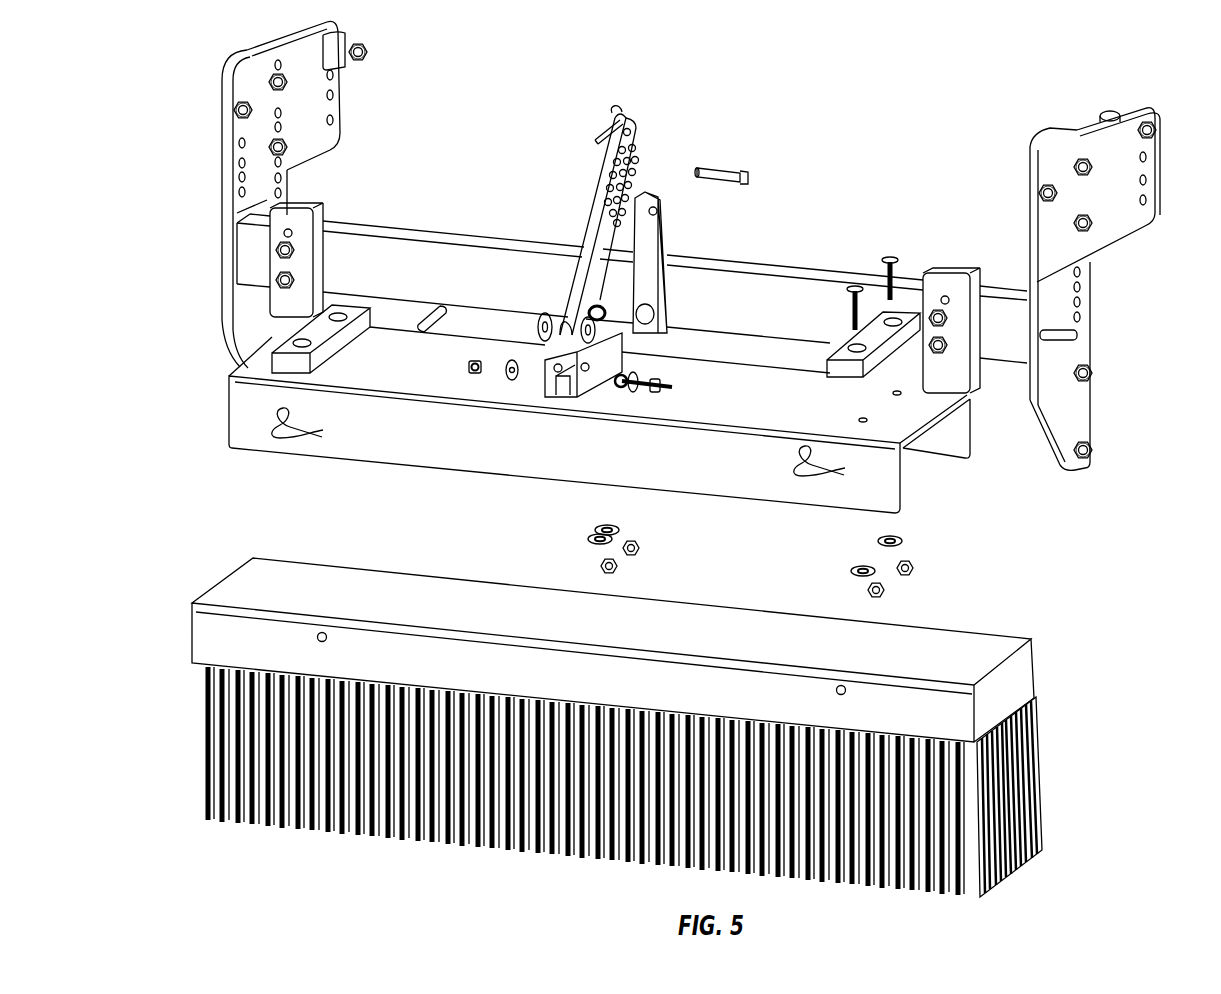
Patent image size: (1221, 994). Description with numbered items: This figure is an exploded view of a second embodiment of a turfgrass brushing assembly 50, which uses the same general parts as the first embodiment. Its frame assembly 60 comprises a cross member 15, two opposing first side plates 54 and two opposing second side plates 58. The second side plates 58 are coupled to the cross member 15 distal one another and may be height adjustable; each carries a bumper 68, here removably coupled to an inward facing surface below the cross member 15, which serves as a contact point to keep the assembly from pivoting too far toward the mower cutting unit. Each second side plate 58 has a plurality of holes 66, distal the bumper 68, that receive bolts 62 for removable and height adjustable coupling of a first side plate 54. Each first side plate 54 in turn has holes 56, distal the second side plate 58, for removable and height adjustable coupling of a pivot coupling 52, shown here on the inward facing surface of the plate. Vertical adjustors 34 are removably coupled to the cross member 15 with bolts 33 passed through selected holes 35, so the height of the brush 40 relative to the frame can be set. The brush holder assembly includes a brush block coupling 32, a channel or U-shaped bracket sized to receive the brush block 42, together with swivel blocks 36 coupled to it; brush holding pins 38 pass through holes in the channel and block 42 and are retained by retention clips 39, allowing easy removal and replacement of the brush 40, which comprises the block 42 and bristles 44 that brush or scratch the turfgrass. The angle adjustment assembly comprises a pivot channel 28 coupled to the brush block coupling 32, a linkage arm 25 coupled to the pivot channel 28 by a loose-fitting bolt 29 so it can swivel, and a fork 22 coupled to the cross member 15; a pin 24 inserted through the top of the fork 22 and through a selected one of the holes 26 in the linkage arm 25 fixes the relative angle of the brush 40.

The cross member 15 is at (462, 238).
The fork 22 is at (637, 197).
The pin 24 is at (717, 170).
The linkage arm 25 is at (593, 217).
The holes 26 is at (630, 148).
The pivot channel 28 is at (547, 377).
The loose-fitting bolt 29 is at (668, 387).
The brush block coupling 32 is at (247, 410).
The bolts 33 is at (283, 255).
The vertical adjustor 34 is at (313, 255).
The holes 35 is at (953, 302).
The swivel blocks 36 is at (320, 332).
The brush holding pins 38 is at (445, 317).
The retention clips 39 is at (260, 428).
The brush 40 is at (586, 709).
The brush block 42 is at (217, 635).
The bristles 44 is at (260, 757).
The turfgrass brushing assembly 50 is at (1048, 294).
The pivot coupling 52 is at (337, 42).
The first side plates 54 is at (297, 35).
The holes 56 is at (335, 100).
The second side plates 58 is at (247, 52).
The frame assembly 60 is at (221, 192).
The bolts 62 is at (243, 125).
The holes 66 is at (245, 160).
The bumper 68 is at (1037, 442).